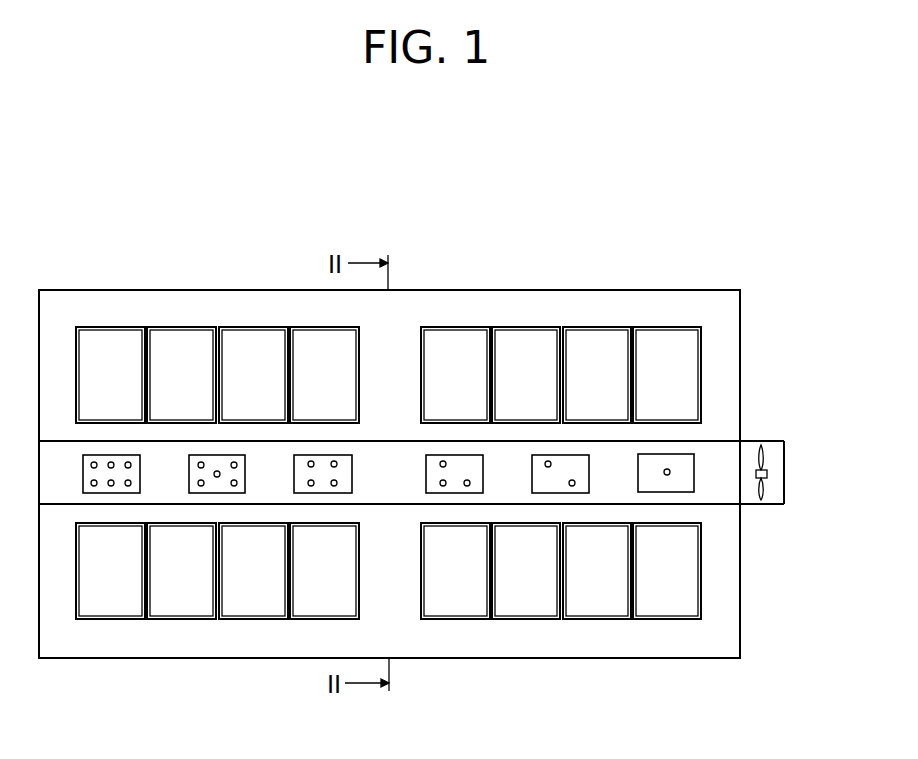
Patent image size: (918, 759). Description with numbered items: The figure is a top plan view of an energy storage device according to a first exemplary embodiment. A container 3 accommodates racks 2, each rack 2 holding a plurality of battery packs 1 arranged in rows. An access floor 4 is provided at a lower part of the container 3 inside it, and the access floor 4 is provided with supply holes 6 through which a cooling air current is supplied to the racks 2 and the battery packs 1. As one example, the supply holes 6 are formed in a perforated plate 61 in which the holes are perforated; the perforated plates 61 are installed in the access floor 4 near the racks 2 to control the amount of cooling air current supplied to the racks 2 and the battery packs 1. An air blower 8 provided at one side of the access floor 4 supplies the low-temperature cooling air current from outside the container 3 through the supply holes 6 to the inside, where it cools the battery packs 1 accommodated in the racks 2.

The battery pack 1 is at (108, 345).
The rack 2 is at (520, 327).
The container 3 is at (683, 290).
The access floor 4 is at (715, 441).
The supply hole 6 is at (665, 475).
The perforated plate 61 is at (687, 482).
The air blower 8 is at (767, 464).